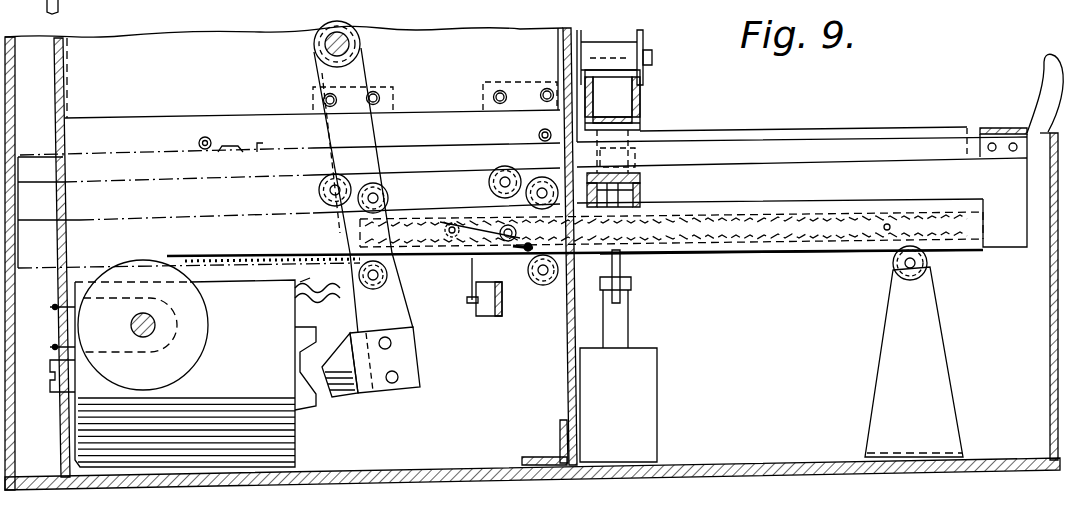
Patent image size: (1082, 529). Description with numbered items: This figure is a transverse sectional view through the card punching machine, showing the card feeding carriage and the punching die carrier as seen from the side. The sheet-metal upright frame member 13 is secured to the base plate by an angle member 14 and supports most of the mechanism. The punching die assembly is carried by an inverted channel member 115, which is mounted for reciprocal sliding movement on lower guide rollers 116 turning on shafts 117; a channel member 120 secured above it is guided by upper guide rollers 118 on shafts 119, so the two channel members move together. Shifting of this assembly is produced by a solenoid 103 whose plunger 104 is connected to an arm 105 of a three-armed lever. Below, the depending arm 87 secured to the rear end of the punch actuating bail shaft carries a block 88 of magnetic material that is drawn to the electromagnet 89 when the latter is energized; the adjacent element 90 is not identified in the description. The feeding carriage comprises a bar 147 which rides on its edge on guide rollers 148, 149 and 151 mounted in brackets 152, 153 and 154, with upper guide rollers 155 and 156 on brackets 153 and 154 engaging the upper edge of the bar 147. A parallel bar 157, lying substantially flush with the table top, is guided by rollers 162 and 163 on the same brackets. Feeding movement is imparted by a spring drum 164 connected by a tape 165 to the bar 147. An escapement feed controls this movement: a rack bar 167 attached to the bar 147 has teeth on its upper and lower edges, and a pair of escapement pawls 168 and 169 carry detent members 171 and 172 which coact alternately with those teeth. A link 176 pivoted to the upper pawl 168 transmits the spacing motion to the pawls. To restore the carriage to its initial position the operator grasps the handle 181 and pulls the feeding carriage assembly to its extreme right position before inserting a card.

The upright frame member 13 is at (570, 364).
The angle member 14 is at (535, 455).
The depending arm 87 is at (413, 325).
The wedge block 88 is at (355, 400).
The electromagnet 89 is at (295, 435).
The spring 90 is at (322, 300).
The solenoid 103 is at (643, 382).
The plunger 104 is at (628, 318).
The arm of three-armed lever 105 is at (630, 288).
The inverted channel member 115 is at (643, 186).
The lower guide roller 116 is at (643, 200).
The shaft 117 is at (660, 257).
The upper guide roller 118 is at (610, 37).
The shaft 119 is at (653, 50).
The channel member 120 is at (640, 97).
The bar 147 is at (762, 257).
The guide roller 148 is at (893, 266).
The guide roller 149 is at (523, 285).
The guide roller 151 is at (410, 297).
The bracket 152 is at (952, 412).
The bracket 153 is at (499, 301).
The bracket 154 is at (302, 280).
The upper guide roller 155 is at (533, 177).
The upper guide roller 156 is at (388, 200).
The parallel bar 157 is at (133, 176).
The roller 162 is at (500, 167).
The roller 163 is at (318, 188).
The spring drum 164 is at (207, 350).
The tape 165 is at (217, 257).
The rack bar 167 is at (962, 248).
The escapement pawl 168 is at (443, 220).
The escapement pawl 169 is at (452, 262).
The detent member 171 is at (447, 217).
The detent member 172 is at (400, 275).
The link 176 is at (472, 272).
The handle 181 is at (1040, 65).